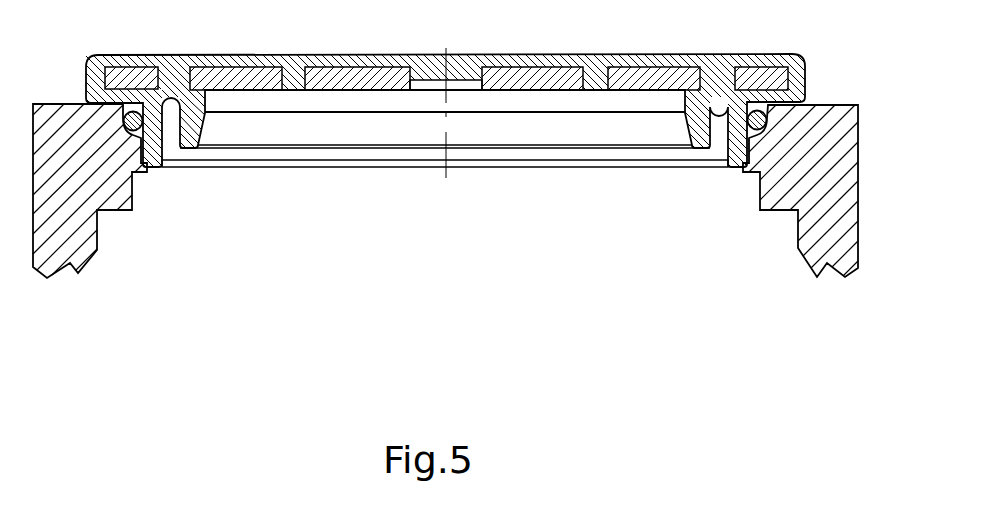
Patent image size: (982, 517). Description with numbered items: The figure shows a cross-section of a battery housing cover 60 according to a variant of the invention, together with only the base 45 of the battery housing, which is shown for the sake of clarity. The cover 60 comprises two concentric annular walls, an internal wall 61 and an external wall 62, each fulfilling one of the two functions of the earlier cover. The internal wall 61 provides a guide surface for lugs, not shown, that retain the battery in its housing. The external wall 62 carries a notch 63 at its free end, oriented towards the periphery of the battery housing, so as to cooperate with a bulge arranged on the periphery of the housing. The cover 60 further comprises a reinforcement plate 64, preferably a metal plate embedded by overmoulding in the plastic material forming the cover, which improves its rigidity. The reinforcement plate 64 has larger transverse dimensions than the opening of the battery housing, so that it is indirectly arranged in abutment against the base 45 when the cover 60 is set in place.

The base 45 is at (853, 140).
The cover 60 is at (793, 54).
The internal wall 61 is at (693, 117).
The external wall 62 is at (727, 146).
The notch 63 is at (152, 172).
The reinforcement plate 64 is at (553, 64).